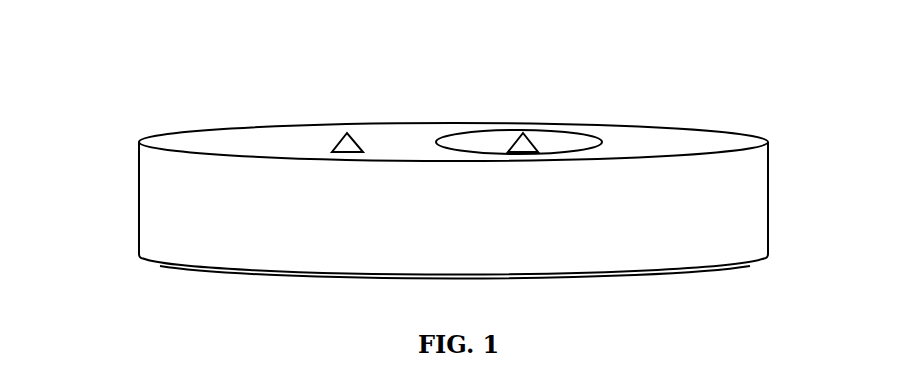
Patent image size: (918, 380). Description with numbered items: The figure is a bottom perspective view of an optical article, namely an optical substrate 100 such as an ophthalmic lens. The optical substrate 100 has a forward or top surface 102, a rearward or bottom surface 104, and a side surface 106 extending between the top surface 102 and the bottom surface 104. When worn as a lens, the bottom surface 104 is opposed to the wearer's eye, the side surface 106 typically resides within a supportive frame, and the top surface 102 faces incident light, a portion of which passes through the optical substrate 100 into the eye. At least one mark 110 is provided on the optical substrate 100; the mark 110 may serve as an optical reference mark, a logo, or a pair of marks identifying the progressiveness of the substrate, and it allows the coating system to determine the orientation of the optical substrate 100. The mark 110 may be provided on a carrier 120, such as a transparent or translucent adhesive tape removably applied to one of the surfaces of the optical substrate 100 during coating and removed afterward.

The optical substrate 100 is at (724, 86).
The top surface 102 is at (238, 273).
The bottom surface 104 is at (240, 143).
The side surface 106 is at (180, 221).
The mark 110 is at (349, 145).
The carrier 120 is at (487, 138).